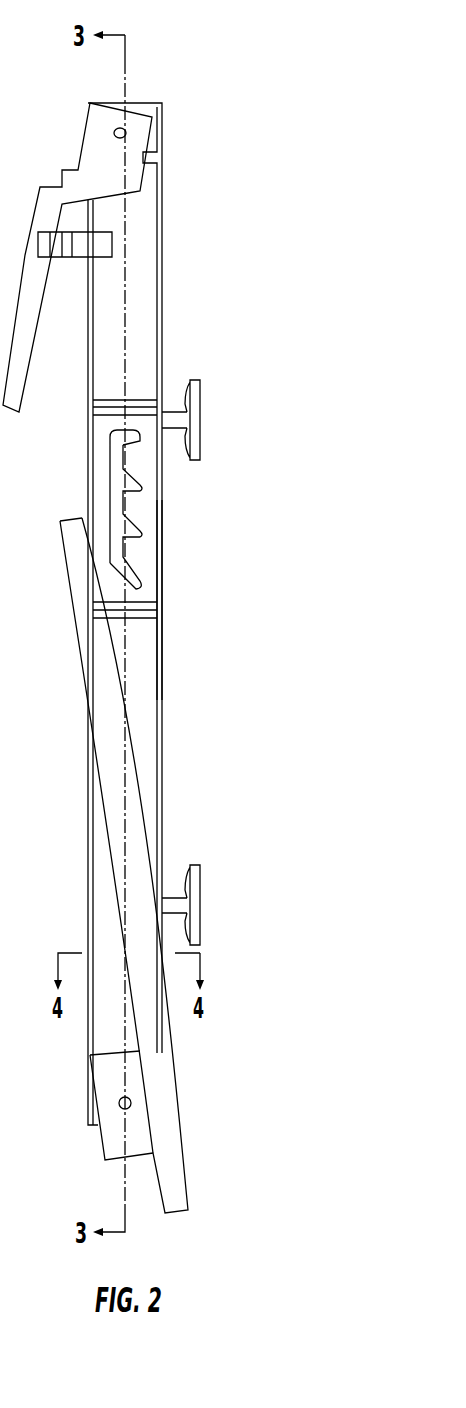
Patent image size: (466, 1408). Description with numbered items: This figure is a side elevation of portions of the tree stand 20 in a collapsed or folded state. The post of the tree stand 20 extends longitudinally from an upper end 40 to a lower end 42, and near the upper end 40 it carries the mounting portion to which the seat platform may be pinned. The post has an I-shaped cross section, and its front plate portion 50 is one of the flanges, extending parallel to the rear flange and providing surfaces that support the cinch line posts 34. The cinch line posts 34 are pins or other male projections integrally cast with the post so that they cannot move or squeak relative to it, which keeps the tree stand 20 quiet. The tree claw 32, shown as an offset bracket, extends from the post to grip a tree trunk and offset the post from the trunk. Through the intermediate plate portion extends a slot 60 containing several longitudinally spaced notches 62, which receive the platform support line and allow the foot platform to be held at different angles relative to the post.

The tree stand 20 is at (73, 99).
The tree claw 32 is at (58, 231).
The cinch line posts 34 is at (198, 401).
The upper end 40 is at (163, 84).
The lower end 42 is at (167, 1228).
The front plate portion 50 is at (163, 595).
The slot 60 is at (95, 526).
The notches 62 is at (142, 538).